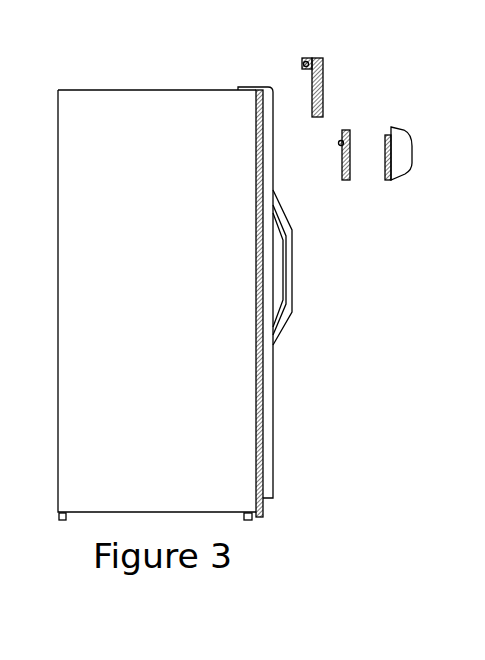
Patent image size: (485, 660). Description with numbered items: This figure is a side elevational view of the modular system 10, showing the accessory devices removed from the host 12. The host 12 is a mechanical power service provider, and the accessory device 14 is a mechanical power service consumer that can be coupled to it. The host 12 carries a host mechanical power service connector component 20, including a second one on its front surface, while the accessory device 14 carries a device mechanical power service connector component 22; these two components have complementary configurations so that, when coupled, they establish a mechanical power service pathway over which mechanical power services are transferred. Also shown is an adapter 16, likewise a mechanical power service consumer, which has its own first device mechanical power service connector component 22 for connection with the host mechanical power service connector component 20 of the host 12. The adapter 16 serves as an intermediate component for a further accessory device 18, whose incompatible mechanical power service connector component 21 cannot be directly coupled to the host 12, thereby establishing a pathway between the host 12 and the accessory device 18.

The modular system 10 is at (310, 376).
The host 12 is at (146, 90).
The accessory device 14 is at (321, 60).
The adapter 16 is at (347, 181).
The accessory device 18 is at (390, 181).
The host mechanical power service connector component 20 is at (272, 143).
The incompatible mechanical power service connector component 21 is at (386, 146).
The device mechanical power service connector component 22 is at (304, 66).